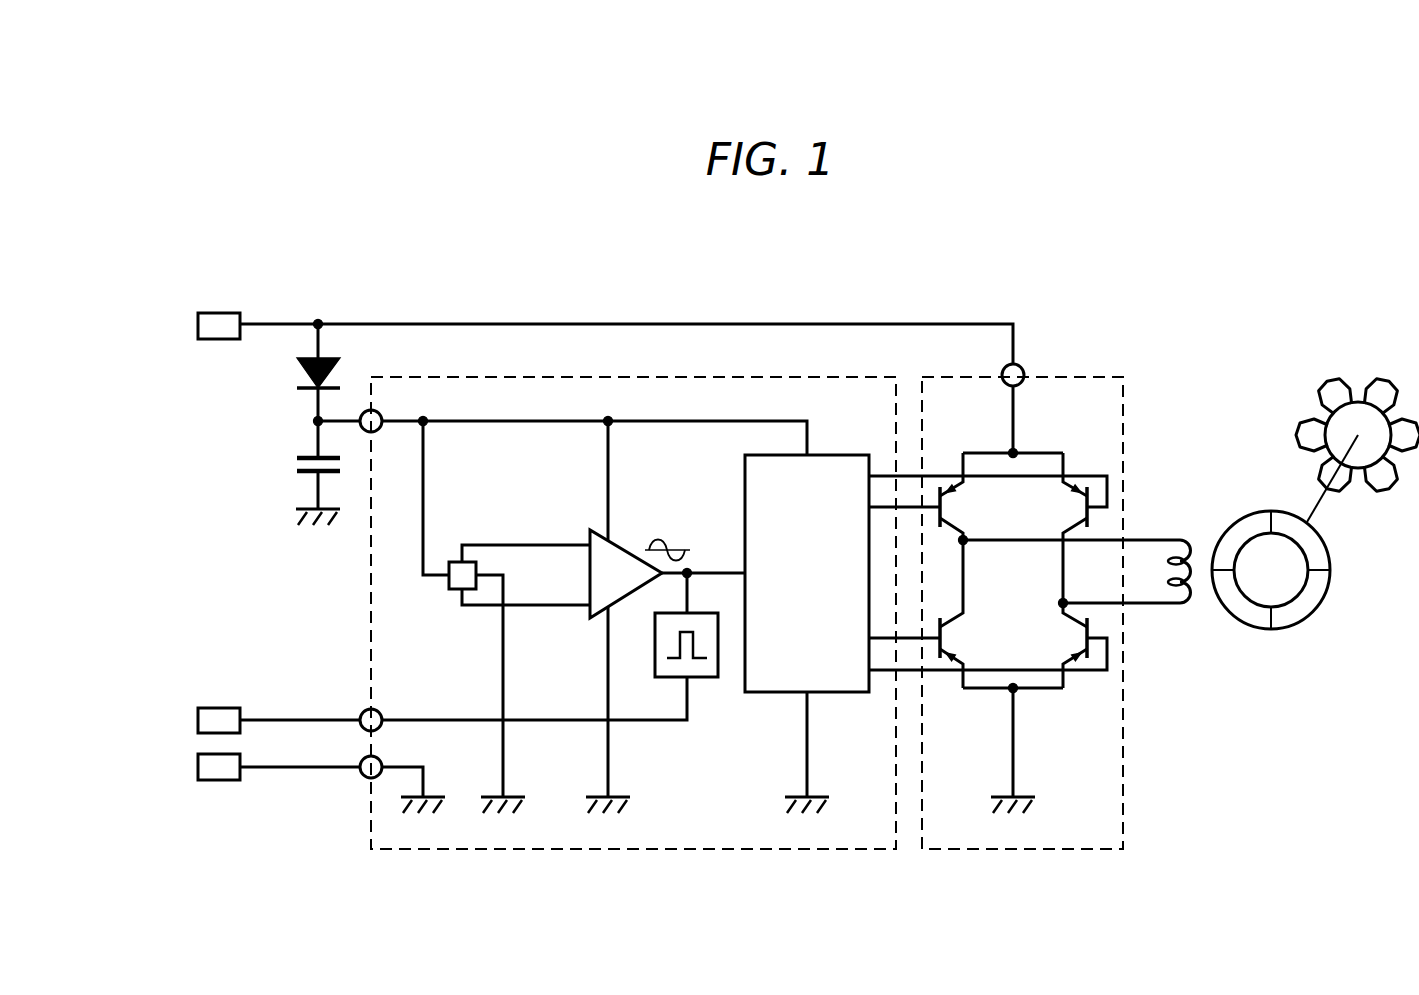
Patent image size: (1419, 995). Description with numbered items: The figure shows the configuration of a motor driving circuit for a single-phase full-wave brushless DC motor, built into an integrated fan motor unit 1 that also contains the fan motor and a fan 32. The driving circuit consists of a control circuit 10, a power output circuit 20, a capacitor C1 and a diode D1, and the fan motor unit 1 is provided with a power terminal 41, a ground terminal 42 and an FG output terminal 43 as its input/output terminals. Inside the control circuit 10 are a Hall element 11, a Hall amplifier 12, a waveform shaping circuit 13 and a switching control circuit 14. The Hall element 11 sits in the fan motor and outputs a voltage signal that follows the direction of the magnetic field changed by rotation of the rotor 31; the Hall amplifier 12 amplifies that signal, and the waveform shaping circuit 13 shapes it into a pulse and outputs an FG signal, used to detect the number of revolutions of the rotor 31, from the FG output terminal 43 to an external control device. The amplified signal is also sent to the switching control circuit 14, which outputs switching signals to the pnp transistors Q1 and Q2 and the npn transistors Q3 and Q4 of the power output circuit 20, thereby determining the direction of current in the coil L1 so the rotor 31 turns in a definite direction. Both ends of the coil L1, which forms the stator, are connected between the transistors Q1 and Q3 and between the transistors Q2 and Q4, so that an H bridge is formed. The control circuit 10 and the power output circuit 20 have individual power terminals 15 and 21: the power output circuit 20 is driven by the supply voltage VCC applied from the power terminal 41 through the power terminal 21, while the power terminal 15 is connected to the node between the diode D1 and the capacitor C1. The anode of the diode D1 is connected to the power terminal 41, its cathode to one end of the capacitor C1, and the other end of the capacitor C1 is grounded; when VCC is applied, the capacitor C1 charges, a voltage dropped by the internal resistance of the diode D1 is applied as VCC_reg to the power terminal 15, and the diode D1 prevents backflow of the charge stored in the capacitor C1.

The fan motor unit 1 is at (1140, 320).
The control circuit 10 is at (641, 377).
The Hall element 11 is at (455, 590).
The Hall amplifier 12 is at (624, 547).
The waveform shaping circuit 13 is at (702, 680).
The switching control circuit 14 is at (744, 489).
The power terminal 15 is at (373, 432).
The power output circuit 20 is at (1050, 376).
The power terminal 21 is at (1003, 370).
The rotor 31 is at (1298, 623).
The fan 32 is at (1378, 380).
The power terminal 41 is at (219, 311).
The ground terminal 42 is at (217, 782).
The FG output terminal 43 is at (220, 706).
The capacitor C1 is at (297, 375).
The diode D1 is at (297, 466).
The coil L1 is at (1190, 540).
The pnp transistor Q1 is at (950, 490).
The pnp transistor Q2 is at (1085, 490).
The npn transistor Q3 is at (948, 660).
The npn transistor Q4 is at (1083, 660).